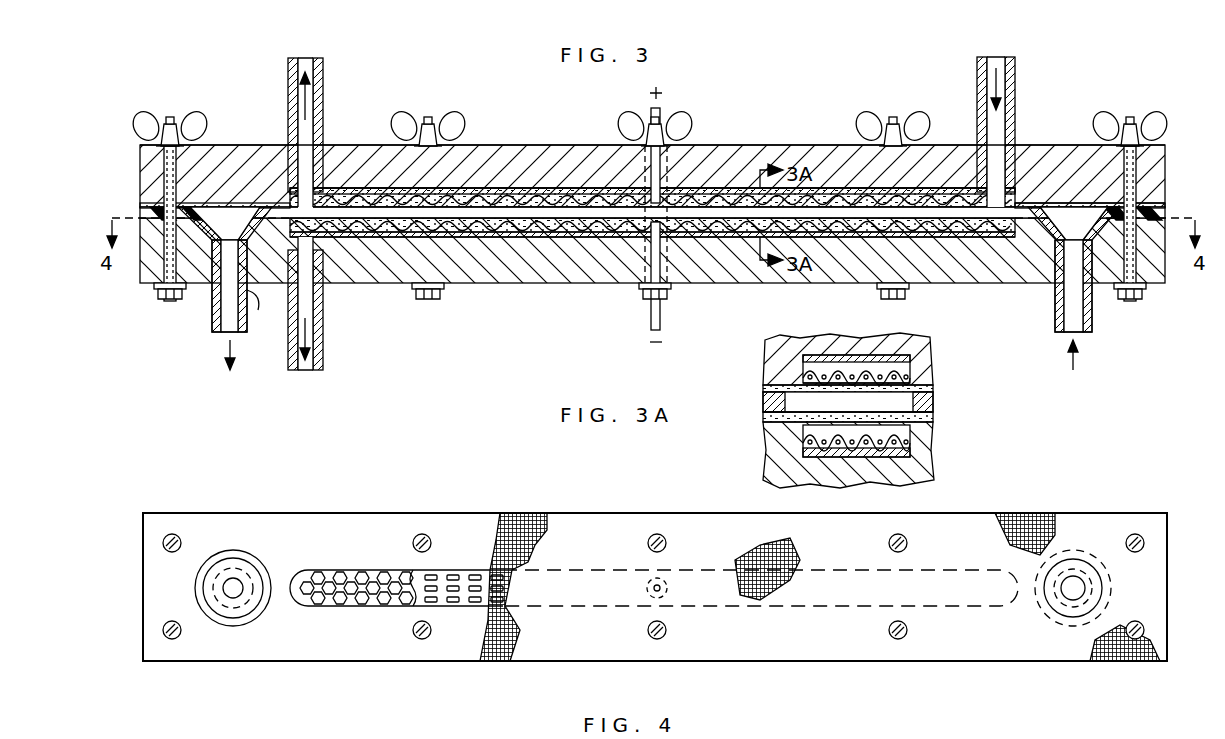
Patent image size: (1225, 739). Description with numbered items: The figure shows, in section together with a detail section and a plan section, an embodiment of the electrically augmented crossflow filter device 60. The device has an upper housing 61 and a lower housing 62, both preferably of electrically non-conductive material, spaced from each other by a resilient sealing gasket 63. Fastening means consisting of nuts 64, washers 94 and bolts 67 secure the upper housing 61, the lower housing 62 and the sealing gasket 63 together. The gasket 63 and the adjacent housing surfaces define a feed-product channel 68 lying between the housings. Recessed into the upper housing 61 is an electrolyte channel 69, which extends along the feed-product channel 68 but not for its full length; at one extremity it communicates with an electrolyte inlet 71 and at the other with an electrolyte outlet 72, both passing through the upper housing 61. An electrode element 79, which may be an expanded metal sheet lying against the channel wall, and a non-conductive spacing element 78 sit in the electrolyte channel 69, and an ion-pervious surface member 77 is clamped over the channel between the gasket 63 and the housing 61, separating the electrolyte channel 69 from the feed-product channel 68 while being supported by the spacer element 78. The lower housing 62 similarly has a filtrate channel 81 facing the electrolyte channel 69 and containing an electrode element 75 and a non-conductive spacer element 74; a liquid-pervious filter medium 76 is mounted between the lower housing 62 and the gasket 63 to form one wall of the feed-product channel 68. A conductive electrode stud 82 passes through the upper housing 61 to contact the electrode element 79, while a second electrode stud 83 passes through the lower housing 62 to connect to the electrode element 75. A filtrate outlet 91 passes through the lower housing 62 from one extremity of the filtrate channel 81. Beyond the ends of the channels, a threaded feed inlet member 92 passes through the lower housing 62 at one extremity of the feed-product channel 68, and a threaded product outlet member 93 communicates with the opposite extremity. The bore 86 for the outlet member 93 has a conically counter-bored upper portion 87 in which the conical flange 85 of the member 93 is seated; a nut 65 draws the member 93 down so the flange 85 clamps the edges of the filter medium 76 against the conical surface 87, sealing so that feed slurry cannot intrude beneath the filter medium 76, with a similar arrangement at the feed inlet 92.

In FIG. 3, the crossflow filter device 60 is at (775, 98).
In FIG. 3, the upper housing 61 is at (582, 146).
In FIG. 3, the lower housing 62 is at (565, 265).
In FIG. 3, the resilient sealing gasket 63 is at (150, 208).
In FIG. 3A, the resilient sealing gasket 63 is at (775, 405).
In FIG. 3, the nuts 64 is at (188, 118).
In FIG. 3, the nut 65 is at (160, 300).
In FIG. 3, the bolts 67 is at (168, 255).
In FIG. 4, the bolts 67 is at (180, 537).
In FIG. 3, the feed-product channel 68 is at (452, 208).
In FIG. 3A, the feed-product channel 68 is at (900, 402).
In FIG. 3, the electrolyte channel 69 is at (492, 198).
In FIG. 3A, the electrolyte channel 69 is at (890, 358).
In FIG. 3, the electrolyte inlet 71 is at (1012, 62).
In FIG. 3, the electrolyte outlet 72 is at (323, 72).
In FIG. 3, the non-conductive spacer element 74 is at (572, 226).
In FIG. 3A, the non-conductive spacer element 74 is at (905, 440).
In FIG. 4, the non-conductive spacer element 74 is at (462, 572).
In FIG. 3, the electrode element 75 is at (872, 234).
In FIG. 3A, the electrode element 75 is at (802, 452).
In FIG. 4, the electrode element 75 is at (356, 570).
In FIG. 3, the liquid-pervious filter medium 76 is at (1060, 226).
In FIG. 3A, the liquid-pervious filter medium 76 is at (932, 426).
In FIG. 4, the liquid-pervious filter medium 76 is at (530, 530).
In FIG. 3, the ion-pervious surface member 77 is at (1030, 206).
In FIG. 3A, the ion-pervious surface member 77 is at (800, 414).
In FIG. 3, the non-conductive spacing element 78 is at (580, 197).
In FIG. 3A, the non-conductive spacing element 78 is at (805, 372).
In FIG. 3, the electrode element 79 is at (880, 192).
In FIG. 3A, the electrode element 79 is at (905, 362).
In FIG. 3, the filtrate channel 81 is at (512, 233).
In FIG. 3A, the filtrate channel 81 is at (895, 450).
In FIG. 3, the conductive electrode stud 82 is at (662, 108).
In FIG. 3, the second electrode stud 83 is at (651, 318).
In FIG. 4, the second electrode stud 83 is at (665, 583).
In FIG. 3, the conical flange 85 is at (216, 216).
In FIG. 4, the conical flange 85 is at (250, 565).
In FIG. 3, the bore 86 is at (265, 307).
In FIG. 3, the conically counter-bored upper portion 87 is at (258, 215).
In FIG. 3, the filtrate outlet 91 is at (323, 298).
In FIG. 3, the threaded feed inlet member 92 is at (1092, 318).
In FIG. 4, the threaded feed inlet member 92 is at (1082, 588).
In FIG. 3, the threaded product outlet member 93 is at (214, 318).
In FIG. 4, the threaded product outlet member 93 is at (240, 593).
In FIG. 3, the washers 94 is at (196, 146).